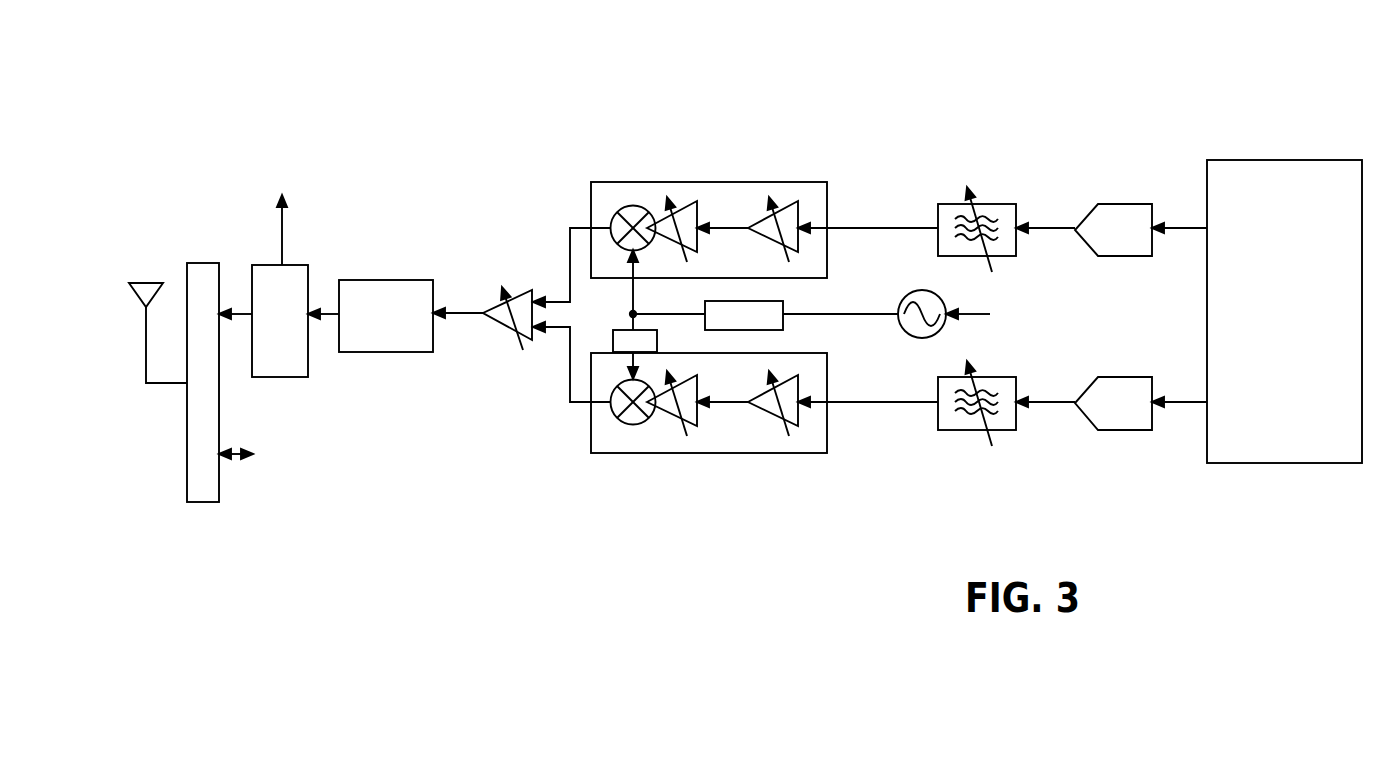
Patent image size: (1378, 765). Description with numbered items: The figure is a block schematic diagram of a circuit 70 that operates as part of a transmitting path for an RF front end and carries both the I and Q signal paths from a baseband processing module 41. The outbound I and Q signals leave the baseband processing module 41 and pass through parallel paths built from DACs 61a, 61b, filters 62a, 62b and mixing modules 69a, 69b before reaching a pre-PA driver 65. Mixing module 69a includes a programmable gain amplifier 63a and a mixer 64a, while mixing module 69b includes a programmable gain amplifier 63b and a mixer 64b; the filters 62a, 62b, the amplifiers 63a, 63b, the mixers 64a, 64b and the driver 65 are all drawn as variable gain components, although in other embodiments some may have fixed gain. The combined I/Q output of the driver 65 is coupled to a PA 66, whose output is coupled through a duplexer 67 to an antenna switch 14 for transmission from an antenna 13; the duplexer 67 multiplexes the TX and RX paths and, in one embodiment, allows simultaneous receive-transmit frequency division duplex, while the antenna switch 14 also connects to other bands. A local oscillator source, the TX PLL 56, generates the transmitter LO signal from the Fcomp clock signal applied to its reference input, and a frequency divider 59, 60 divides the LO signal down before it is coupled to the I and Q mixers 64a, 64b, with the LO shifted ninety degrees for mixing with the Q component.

The circuit 70 is at (1216, 63).
The antenna 13 is at (138, 309).
The antenna switch 14 is at (198, 263).
The duplexer 67 is at (262, 265).
The PA 66 is at (393, 280).
The pre-PA driver 65 is at (490, 300).
The mixer 64a is at (632, 205).
The mixer 64b is at (631, 425).
The mixing module 69a is at (734, 200).
The mixing module 69b is at (746, 413).
The programmable gain amplifier 63a is at (799, 216).
The programmable gain amplifier 63b is at (799, 393).
The divider 59 is at (794, 309).
The divider 60 is at (785, 303).
The TX PLL 56 is at (912, 290).
The filter 62a is at (1000, 203).
The filter 62b is at (994, 377).
The DAC 61a is at (1125, 204).
The DAC 61b is at (1125, 377).
The baseband processing module 41 is at (1325, 464).